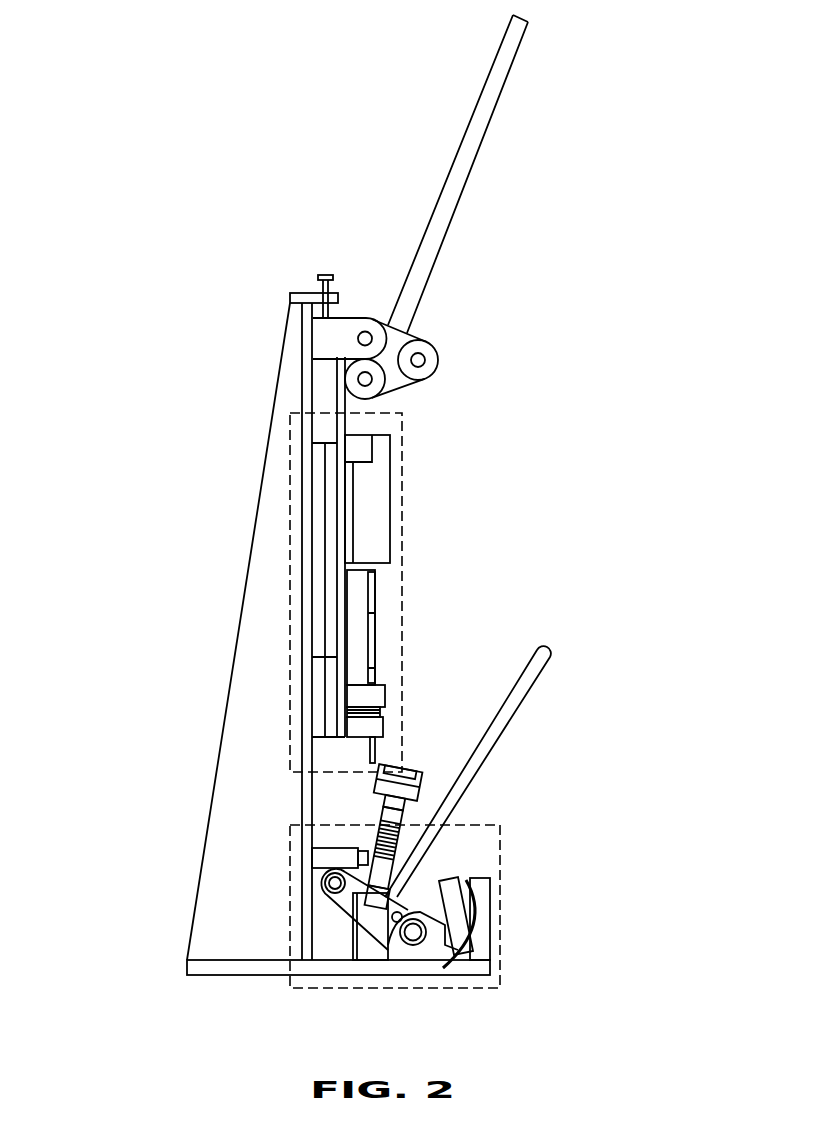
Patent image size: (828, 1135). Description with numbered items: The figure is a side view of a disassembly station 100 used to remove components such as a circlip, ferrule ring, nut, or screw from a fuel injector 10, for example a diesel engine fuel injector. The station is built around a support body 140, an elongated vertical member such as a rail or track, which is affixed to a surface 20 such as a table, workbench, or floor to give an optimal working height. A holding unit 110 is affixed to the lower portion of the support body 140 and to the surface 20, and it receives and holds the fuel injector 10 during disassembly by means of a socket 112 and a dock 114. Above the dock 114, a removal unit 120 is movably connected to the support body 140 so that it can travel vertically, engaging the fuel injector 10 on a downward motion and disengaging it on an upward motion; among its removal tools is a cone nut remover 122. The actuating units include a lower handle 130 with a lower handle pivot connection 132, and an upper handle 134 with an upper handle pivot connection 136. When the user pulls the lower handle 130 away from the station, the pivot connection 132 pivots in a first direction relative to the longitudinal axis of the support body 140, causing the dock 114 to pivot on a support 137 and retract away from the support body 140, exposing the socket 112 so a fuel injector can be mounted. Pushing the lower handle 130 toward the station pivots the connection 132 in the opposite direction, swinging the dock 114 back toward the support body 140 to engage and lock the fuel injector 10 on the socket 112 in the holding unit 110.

The disassembly station 100 is at (288, 290).
The fuel injector 10 is at (373, 808).
The surface 20 is at (242, 965).
The holding unit 110 is at (500, 970).
The socket 112 is at (363, 932).
The dock 114 is at (335, 857).
The removal unit 120 is at (402, 513).
The cone nut remover 122 is at (377, 748).
The lower handle 130 is at (548, 660).
The lower handle pivot connection 132 is at (390, 902).
The upper handle 134 is at (467, 147).
The upper handle pivot connection 136 is at (433, 365).
The support 137 is at (397, 952).
The support body 140 is at (308, 563).